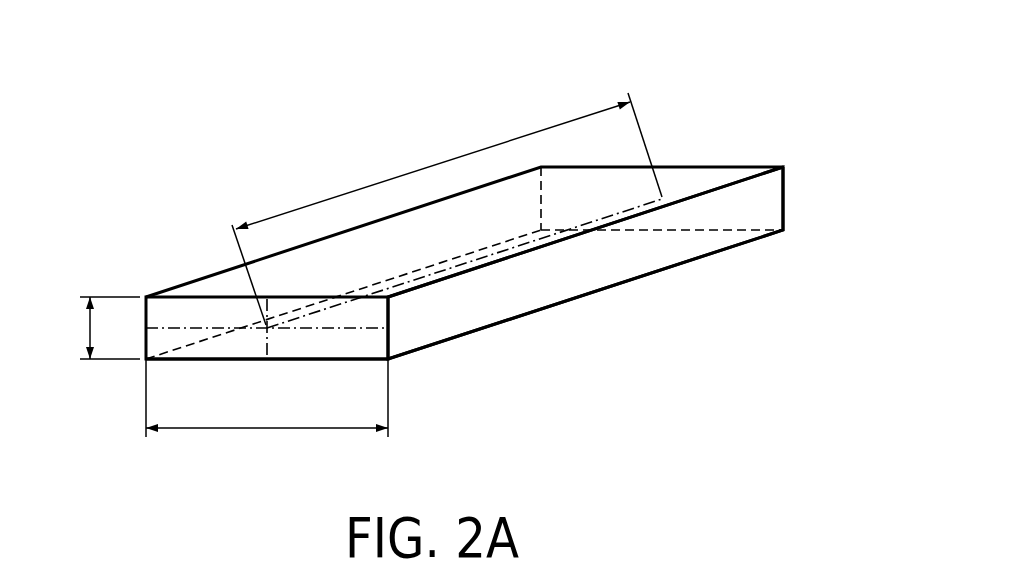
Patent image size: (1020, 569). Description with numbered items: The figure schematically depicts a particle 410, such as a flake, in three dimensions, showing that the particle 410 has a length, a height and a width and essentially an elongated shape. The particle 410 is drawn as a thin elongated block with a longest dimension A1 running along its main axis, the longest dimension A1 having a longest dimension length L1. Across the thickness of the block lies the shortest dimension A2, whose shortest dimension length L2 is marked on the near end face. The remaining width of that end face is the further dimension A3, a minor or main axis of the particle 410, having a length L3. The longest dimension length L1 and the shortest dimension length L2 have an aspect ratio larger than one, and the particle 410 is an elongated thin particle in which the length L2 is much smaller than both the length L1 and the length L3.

The particle 410 is at (730, 74).
The longest dimension length L1 is at (447, 209).
The shortest dimension length L2 is at (97, 328).
The further dimension length L3 is at (267, 413).
The longest dimension A1 is at (488, 257).
The shortest dimension A2 is at (262, 338).
The further dimension A3 is at (337, 330).